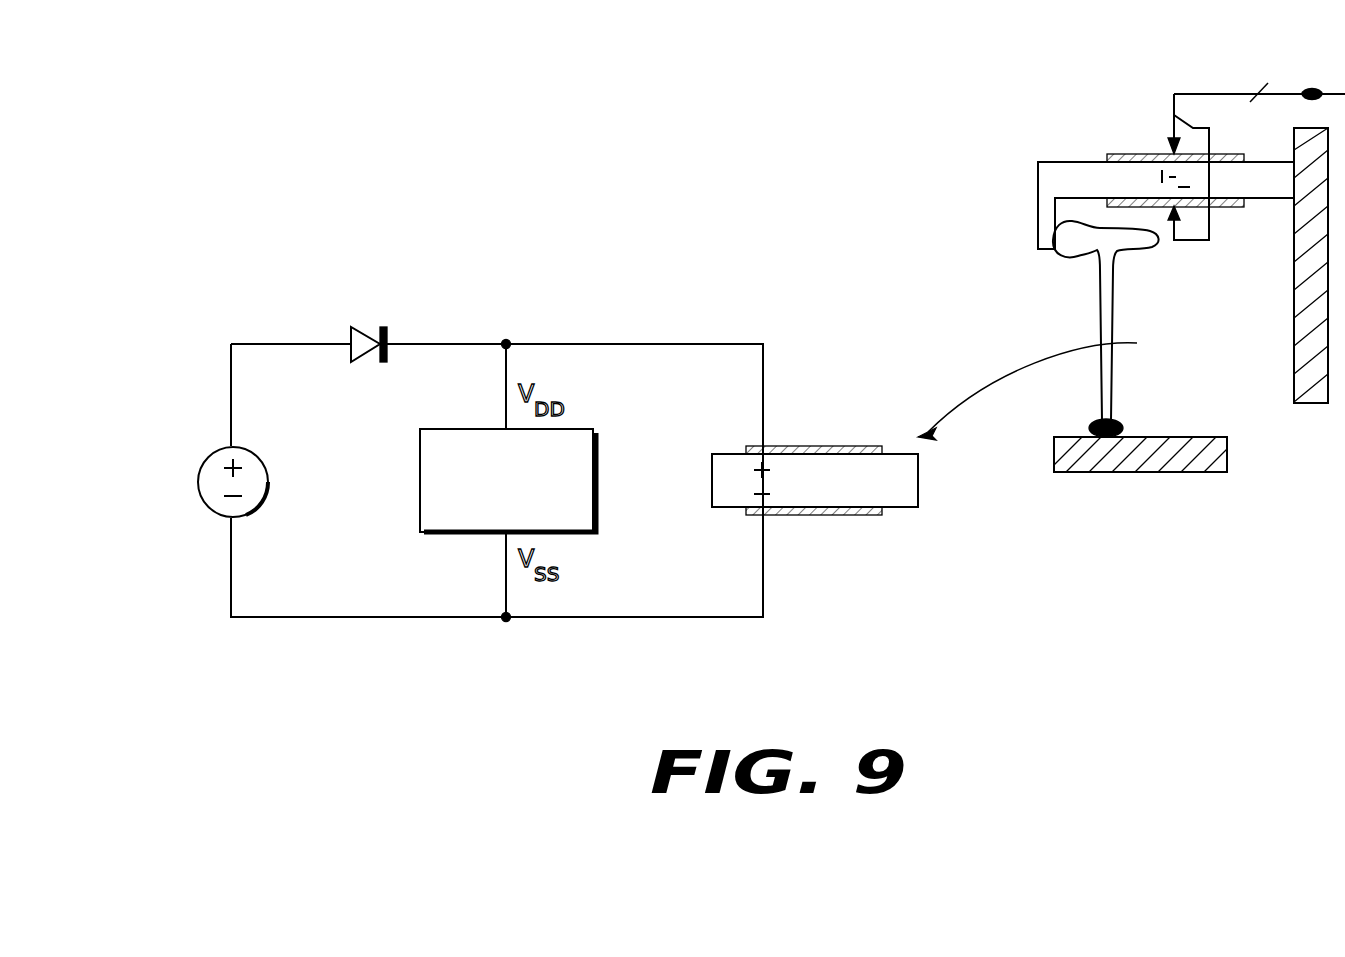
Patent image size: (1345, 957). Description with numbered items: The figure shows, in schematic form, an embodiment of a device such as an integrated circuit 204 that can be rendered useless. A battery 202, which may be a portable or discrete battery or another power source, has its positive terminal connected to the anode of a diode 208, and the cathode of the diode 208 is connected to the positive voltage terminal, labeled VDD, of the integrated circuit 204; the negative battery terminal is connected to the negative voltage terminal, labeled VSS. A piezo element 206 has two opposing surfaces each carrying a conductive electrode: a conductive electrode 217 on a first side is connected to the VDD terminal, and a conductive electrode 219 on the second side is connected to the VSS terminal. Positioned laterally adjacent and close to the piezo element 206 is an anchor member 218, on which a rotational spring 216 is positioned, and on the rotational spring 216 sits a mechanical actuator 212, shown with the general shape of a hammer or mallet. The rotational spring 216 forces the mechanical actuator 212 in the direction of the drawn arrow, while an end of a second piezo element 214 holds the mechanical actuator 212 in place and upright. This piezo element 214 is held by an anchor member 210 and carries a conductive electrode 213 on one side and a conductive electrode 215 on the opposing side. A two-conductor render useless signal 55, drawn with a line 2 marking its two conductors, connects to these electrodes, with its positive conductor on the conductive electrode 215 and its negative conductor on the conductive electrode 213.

The wire / line 2 is at (1256, 80).
The render useless signal 55 is at (1222, 94).
The battery 202 is at (198, 468).
The integrated circuit 204 is at (420, 466).
The piezo element 206 is at (712, 478).
The diode 208 is at (356, 327).
The anchor member 210 is at (1305, 362).
The mechanical actuator 212 is at (1108, 319).
The conductive electrode 213 is at (1133, 196).
The piezo element 214 is at (1047, 180).
The conductive electrode 215 is at (1154, 154).
The rotational spring 216 is at (1119, 422).
The conductive electrode 217 is at (816, 446).
The anchor member 218 is at (1147, 465).
The conductive electrode 219 is at (812, 515).